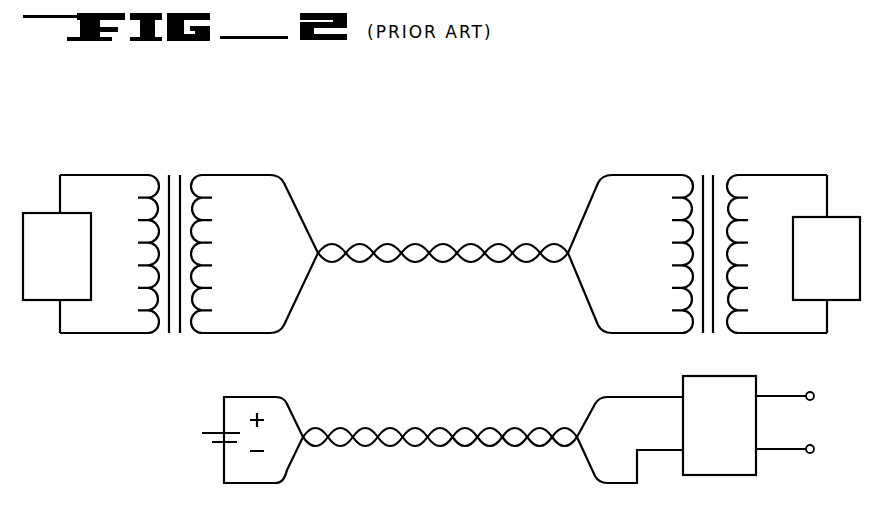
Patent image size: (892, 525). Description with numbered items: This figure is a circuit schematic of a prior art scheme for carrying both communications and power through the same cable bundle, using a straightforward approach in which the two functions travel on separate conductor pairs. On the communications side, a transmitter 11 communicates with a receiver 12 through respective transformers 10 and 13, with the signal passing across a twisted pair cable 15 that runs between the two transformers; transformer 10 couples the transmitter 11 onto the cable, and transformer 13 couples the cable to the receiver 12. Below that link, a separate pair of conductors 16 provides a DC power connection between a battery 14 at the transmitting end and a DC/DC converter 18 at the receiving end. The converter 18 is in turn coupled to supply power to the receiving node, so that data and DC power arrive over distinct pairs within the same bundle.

The transformer 10 is at (238, 138).
The transmitter 11 is at (67, 292).
The receiver 12 is at (840, 292).
The transformer 13 is at (765, 138).
The battery 14 is at (208, 442).
The twisted pair cable 15 is at (396, 246).
The separate pair of conductors 16 is at (443, 432).
The DC/DC converter 18 is at (733, 463).